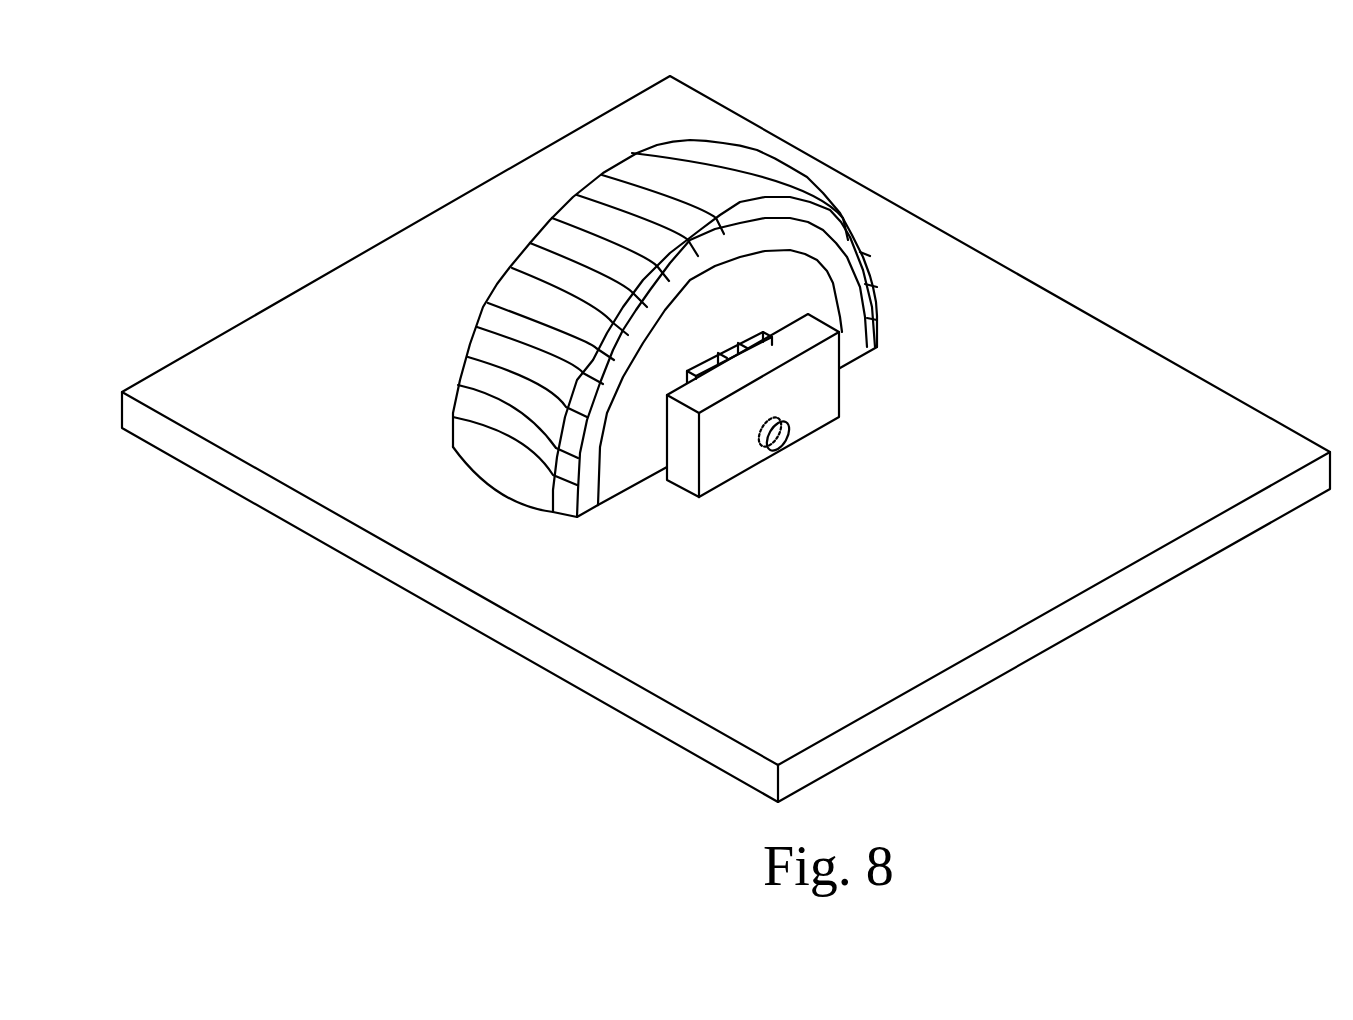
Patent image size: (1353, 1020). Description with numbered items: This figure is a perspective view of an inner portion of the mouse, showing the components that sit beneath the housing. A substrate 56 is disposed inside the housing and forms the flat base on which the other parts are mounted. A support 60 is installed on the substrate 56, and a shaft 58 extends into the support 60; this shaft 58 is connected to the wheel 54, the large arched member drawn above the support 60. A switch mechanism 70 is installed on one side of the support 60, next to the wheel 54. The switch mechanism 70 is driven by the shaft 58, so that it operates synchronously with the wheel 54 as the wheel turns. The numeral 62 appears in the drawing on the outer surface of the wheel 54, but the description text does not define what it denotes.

The wheel 54 is at (596, 274).
The substrate 56 is at (1026, 511).
The shaft 58 is at (775, 444).
The support 60 is at (688, 380).
The tread surface with ribs 62 is at (660, 168).
The switch mechanism 70 is at (818, 396).